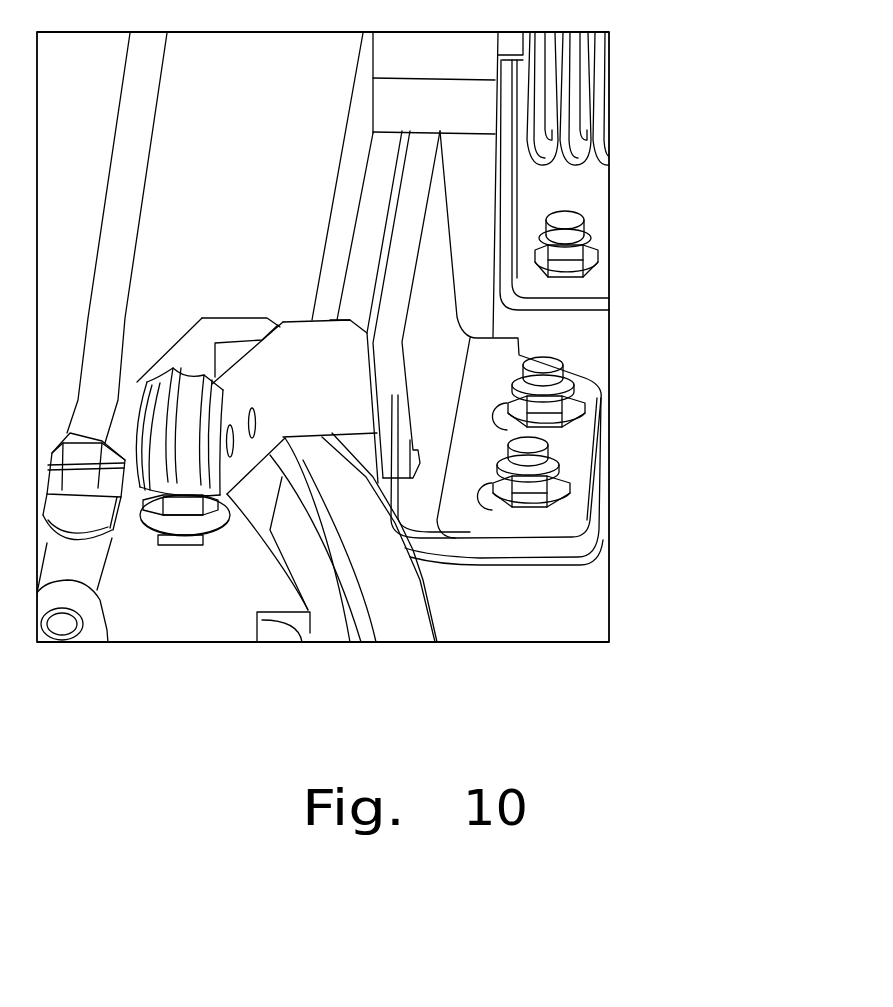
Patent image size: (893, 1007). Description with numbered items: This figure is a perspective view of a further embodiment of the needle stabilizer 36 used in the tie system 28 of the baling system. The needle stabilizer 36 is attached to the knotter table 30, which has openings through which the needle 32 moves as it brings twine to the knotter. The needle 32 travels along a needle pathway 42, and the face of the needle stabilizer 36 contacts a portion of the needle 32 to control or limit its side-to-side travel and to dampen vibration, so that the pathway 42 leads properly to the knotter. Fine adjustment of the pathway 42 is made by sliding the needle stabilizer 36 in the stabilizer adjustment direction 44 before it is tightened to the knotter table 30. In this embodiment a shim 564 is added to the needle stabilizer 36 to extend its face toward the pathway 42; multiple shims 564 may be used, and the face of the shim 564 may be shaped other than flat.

The tie system 28 is at (633, 118).
The knotter table 30 is at (548, 627).
The needle 32 is at (330, 607).
The needle stabilizer 36 is at (552, 325).
The needle pathway 42 is at (353, 498).
The stabilizer adjustment direction 44 is at (625, 457).
The shim 564 is at (520, 563).